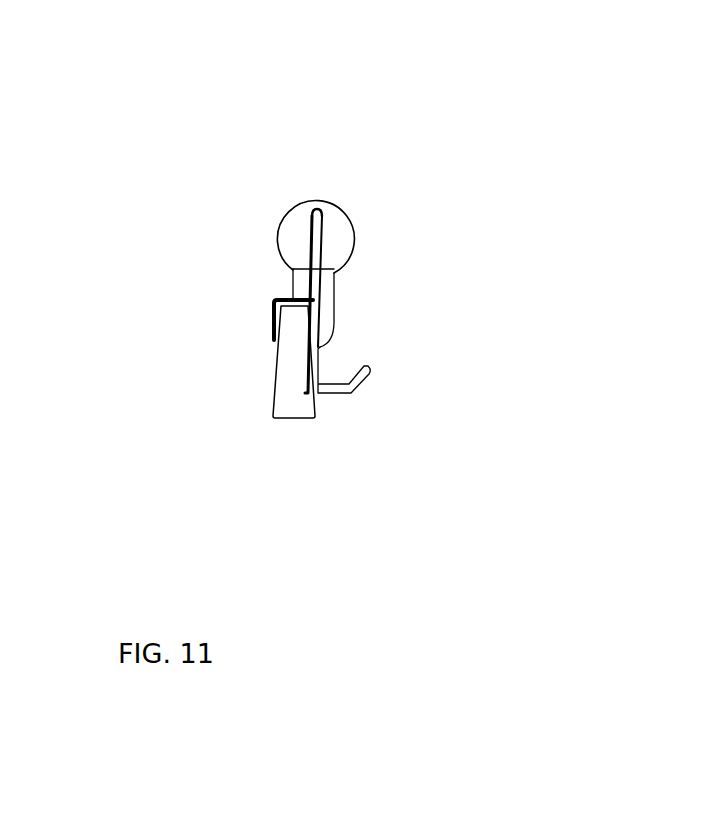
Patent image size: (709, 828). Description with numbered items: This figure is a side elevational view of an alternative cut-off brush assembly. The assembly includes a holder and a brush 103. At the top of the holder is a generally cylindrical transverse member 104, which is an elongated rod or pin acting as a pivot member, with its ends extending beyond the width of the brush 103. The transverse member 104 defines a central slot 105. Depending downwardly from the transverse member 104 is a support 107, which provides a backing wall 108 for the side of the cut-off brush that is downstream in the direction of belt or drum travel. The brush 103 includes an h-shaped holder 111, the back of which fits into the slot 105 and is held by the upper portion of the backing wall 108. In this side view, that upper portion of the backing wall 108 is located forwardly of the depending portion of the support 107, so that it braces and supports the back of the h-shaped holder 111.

The brush 103 is at (270, 325).
The upper cylindrical transverse member 104 is at (337, 223).
The central slot 105 is at (312, 223).
The downwardly depending support 107 is at (335, 300).
The backing wall 108 is at (317, 362).
The h-shaped holder 111 is at (273, 299).